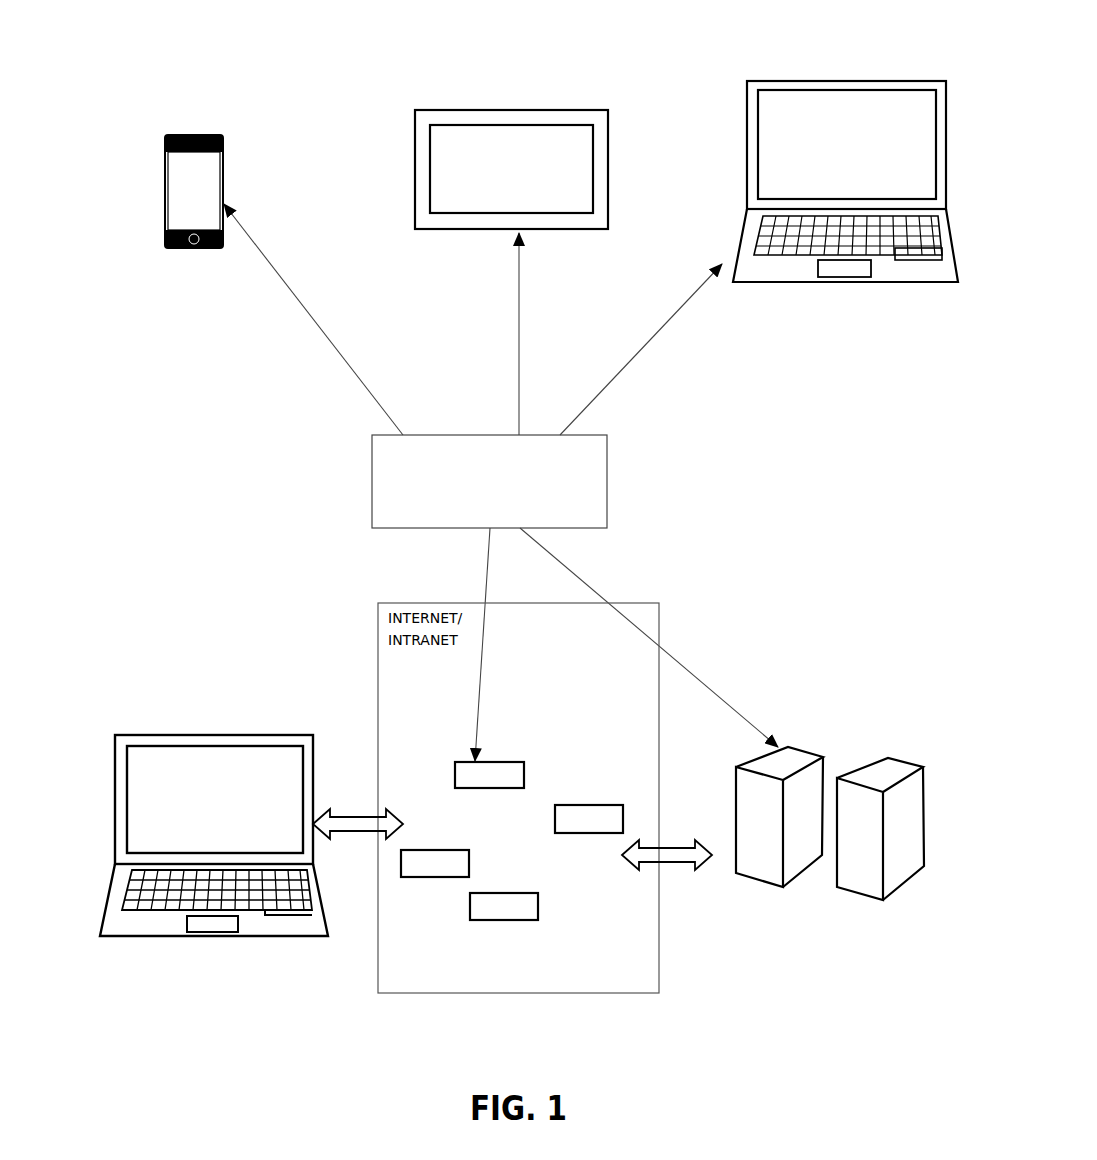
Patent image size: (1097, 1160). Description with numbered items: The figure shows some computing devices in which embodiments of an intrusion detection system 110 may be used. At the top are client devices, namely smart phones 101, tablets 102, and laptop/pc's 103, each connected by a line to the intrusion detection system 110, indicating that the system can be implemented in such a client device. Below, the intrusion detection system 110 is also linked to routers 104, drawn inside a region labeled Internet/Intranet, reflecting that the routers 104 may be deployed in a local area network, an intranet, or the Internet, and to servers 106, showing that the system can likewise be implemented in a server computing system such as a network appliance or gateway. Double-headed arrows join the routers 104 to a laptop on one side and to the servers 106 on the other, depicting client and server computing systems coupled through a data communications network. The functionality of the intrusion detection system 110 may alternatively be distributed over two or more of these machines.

The smart phones 101 is at (150, 128).
The tablets 102 is at (406, 92).
The laptop/pc's 103 is at (781, 62).
The routers 104 is at (512, 841).
The servers 106 is at (841, 690).
The intrusion detection system 110 is at (501, 482).